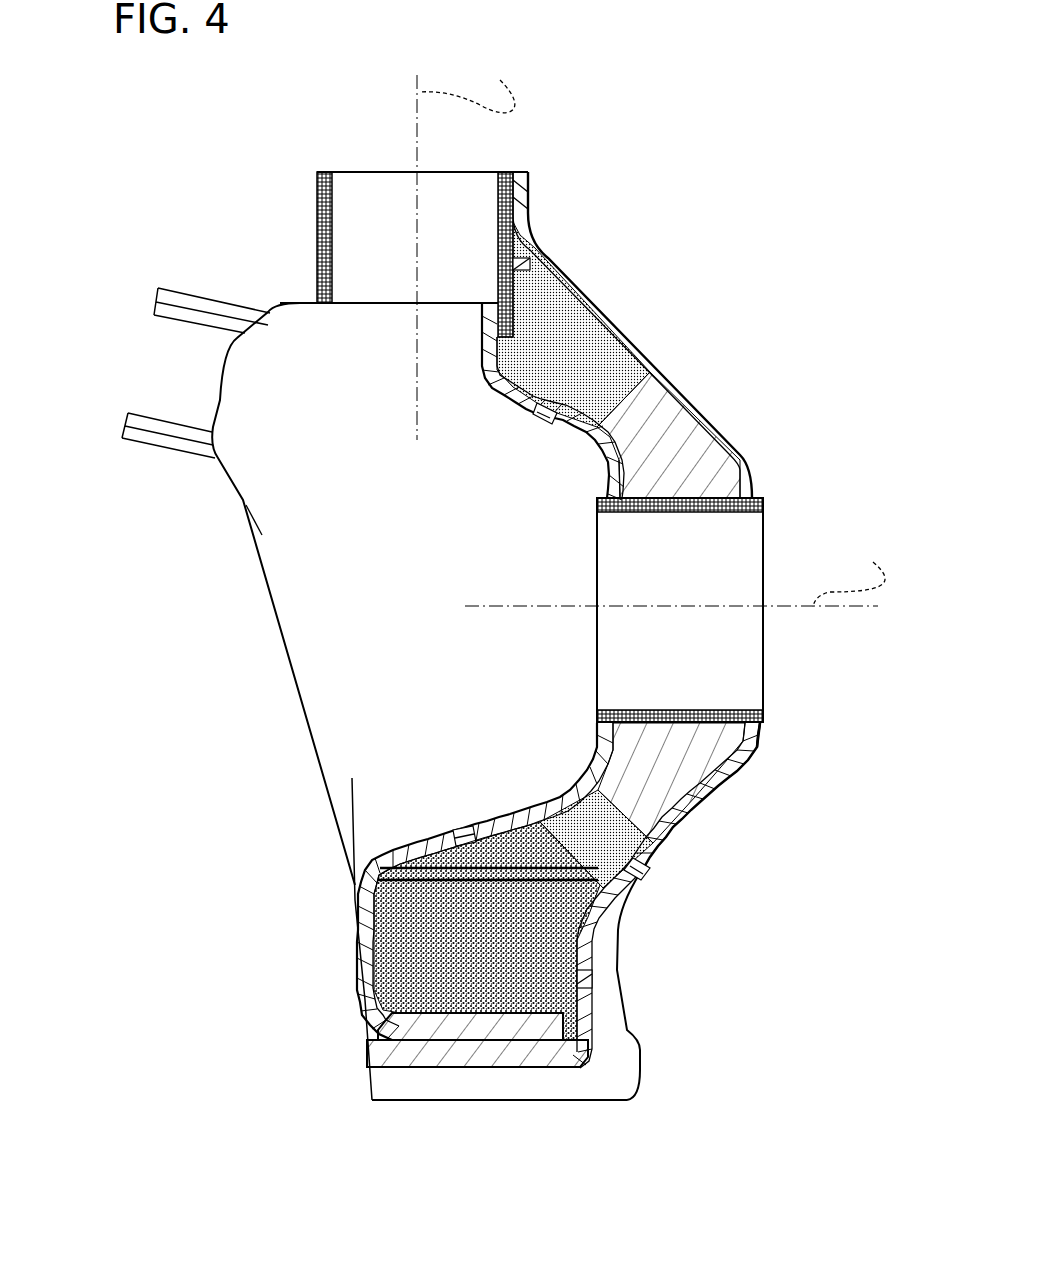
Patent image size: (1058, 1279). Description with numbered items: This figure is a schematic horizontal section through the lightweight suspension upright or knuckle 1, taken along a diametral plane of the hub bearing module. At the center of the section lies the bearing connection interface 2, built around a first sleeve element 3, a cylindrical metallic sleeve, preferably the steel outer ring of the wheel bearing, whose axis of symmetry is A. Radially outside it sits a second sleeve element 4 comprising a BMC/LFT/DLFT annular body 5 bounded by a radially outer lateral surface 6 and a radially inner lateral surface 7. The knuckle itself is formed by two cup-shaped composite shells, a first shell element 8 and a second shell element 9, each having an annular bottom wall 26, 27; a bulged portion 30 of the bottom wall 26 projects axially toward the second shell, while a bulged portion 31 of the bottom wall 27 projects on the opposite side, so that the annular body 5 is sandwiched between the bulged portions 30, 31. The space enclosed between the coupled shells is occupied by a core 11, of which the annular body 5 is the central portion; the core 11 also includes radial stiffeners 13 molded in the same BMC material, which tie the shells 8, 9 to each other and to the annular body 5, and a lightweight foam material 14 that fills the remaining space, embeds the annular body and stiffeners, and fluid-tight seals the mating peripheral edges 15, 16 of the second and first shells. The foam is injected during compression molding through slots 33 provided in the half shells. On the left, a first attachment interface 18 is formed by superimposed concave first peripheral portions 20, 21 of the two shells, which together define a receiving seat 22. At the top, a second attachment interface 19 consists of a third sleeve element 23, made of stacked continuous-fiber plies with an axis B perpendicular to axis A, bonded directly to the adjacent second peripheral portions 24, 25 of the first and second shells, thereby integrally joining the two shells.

The suspension upright or knuckle 1 is at (740, 289).
The bearing connection interface 2 is at (737, 617).
The first sleeve element 3 is at (696, 500).
The second sleeve element 4 is at (690, 437).
The annular body 5 is at (703, 760).
The radially outer lateral surface 6 is at (633, 878).
The radially inner lateral surface 7 is at (640, 710).
The first shell element 8 is at (560, 440).
The second shell element 9 is at (764, 736).
The core 11 is at (612, 438).
The radial stiffeners 13 is at (558, 306).
The foam material 14 is at (380, 940).
The peripheral edge 15 is at (525, 1055).
The peripheral edge 16 is at (467, 1040).
The first attachment interface 18 is at (155, 370).
The second attachment interface 19 is at (350, 187).
The first peripheral portion 20 is at (158, 300).
The first peripheral portion 21 is at (127, 440).
The receiving seat 22 is at (220, 422).
The third sleeve element 23 is at (317, 258).
The second peripheral portion 24 is at (478, 312).
The second peripheral portion 25 is at (517, 178).
The annular bottom wall 26 is at (605, 743).
The annular bottom wall 27 is at (755, 468).
The bulged portion 30 is at (580, 398).
The bulged portion 31 is at (745, 770).
The through slots 33 is at (545, 410).